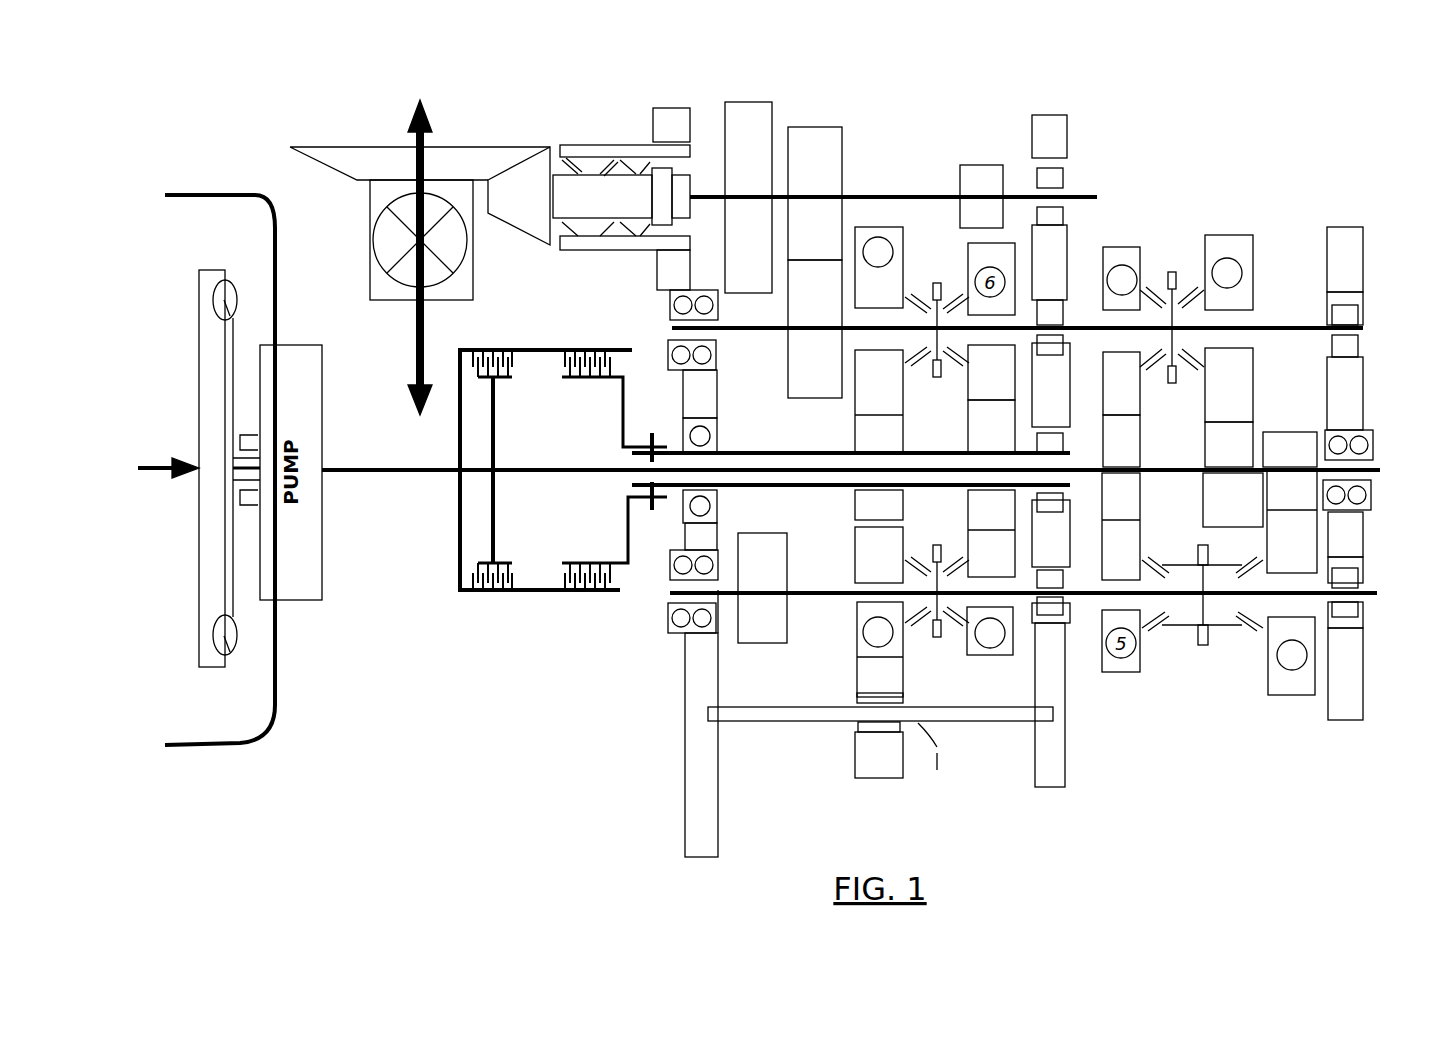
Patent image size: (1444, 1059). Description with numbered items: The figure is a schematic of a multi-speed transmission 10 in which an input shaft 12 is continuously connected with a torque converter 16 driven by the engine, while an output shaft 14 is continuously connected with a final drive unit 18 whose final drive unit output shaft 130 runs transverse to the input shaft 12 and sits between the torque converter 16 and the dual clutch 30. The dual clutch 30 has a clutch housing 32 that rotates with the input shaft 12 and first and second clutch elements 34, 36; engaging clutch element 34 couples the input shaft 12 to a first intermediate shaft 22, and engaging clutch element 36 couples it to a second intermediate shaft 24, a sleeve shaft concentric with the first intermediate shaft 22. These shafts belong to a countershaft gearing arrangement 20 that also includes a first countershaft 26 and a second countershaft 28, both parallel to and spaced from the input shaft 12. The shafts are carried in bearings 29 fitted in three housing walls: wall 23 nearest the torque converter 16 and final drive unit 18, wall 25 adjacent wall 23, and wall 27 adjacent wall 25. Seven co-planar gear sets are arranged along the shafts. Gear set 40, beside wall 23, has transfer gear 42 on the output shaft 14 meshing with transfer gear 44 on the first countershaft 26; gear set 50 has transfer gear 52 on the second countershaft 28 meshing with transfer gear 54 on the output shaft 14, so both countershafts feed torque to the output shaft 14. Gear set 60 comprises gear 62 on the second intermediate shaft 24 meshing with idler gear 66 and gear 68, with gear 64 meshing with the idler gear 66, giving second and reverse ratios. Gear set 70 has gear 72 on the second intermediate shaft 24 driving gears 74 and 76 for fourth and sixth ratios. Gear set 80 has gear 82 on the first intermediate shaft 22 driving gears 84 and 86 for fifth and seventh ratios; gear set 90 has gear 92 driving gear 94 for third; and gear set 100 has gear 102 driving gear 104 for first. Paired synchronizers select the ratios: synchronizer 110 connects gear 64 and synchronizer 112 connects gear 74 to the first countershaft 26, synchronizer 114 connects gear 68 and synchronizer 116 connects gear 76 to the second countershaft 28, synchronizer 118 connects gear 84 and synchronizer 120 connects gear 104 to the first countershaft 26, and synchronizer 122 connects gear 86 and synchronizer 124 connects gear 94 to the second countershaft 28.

The multi-speed transmission 10 is at (246, 150).
The input member 12 is at (362, 472).
The output member 14 is at (702, 197).
The torque converter 16 is at (199, 578).
The final drive unit 18 is at (516, 110).
The countershaft gearing arrangement 20 is at (1120, 168).
The first intermediate shaft 22 is at (530, 472).
The first support structure or wall 23 is at (685, 680).
The second intermediate shaft 24 is at (778, 453).
The second support structure or wall 25 is at (1052, 790).
The first countershaft 26 is at (808, 594).
The third support structure or wall 27 is at (1340, 722).
The second countershaft 28 is at (1310, 328).
The bearings 29 is at (670, 305).
The dual clutch 30 is at (530, 508).
The clutch housing 32 is at (527, 590).
The first clutch element 34 is at (510, 377).
The second clutch element 36 is at (620, 392).
The gear set 40 is at (758, 675).
The transfer gear 42 is at (748, 197).
The transfer gear 44 is at (762, 588).
The gear set 50 is at (840, 110).
The transfer gear 52 is at (815, 329).
The transfer gear 54 is at (815, 193).
The gear set 60 is at (860, 782).
The gear 62 is at (879, 401).
The gear 64 is at (879, 536).
The idler gear 66 is at (880, 652).
The gear 68 is at (879, 267).
The gear set 70 is at (989, 675).
The gear 72 is at (991, 426).
The gear 74 is at (991, 533).
The gear 76 is at (991, 372).
The gear set 80 is at (1125, 237).
The gear 82 is at (1121, 441).
The gear 84 is at (1121, 526).
The gear 86 is at (1121, 383).
The gear set 90 is at (1239, 223).
The gear 92 is at (1229, 444).
The gear 94 is at (1229, 385).
The gear set 100 is at (1288, 715).
The gear 102 is at (1290, 449).
The gear 104 is at (1292, 521).
The synchronizer 110 is at (919, 641).
The synchronizer 112 is at (950, 548).
The synchronizer 114 is at (919, 378).
The synchronizer 116 is at (950, 282).
The synchronizer 118 is at (1164, 633).
The synchronizer 120 is at (1242, 633).
The synchronizer 122 is at (1156, 378).
The synchronizer 124 is at (1188, 282).
The final drive unit output shaft 130 is at (415, 330).